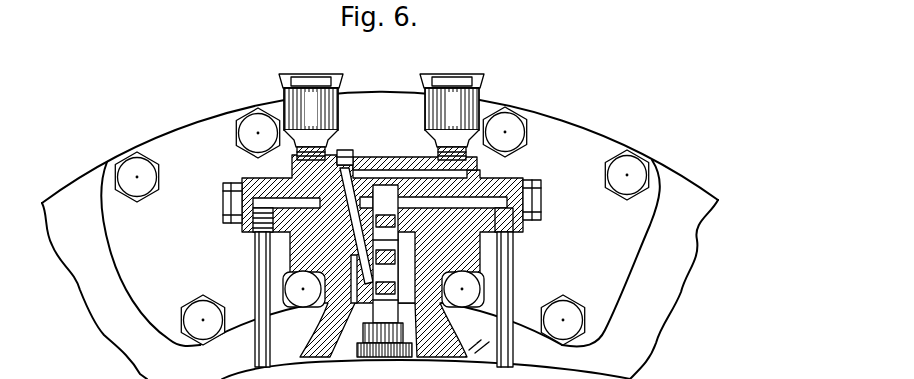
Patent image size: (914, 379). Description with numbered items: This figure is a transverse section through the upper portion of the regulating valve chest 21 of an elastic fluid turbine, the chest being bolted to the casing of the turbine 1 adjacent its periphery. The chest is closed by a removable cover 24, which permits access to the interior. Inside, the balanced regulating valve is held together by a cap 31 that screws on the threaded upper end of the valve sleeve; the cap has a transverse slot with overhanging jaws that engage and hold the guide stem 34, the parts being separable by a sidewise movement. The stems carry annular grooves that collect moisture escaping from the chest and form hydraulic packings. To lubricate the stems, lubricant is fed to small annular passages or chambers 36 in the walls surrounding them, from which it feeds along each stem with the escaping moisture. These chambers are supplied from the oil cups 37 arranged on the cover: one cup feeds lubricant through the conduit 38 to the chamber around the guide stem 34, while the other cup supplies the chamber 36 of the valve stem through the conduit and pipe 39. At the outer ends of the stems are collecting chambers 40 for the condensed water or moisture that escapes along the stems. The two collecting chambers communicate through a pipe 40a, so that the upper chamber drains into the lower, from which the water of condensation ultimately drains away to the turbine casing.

The casing of the turbine 1 is at (380, 235).
The regulating valve chest 21 is at (448, 338).
The removable cover 24 is at (341, 160).
The cap 31 is at (352, 352).
The guide stem 34 is at (374, 308).
The annular passages or chambers 36 is at (398, 303).
The oil cups 37 is at (421, 92).
The conduit 38 is at (399, 174).
The conduit and pipe 39 is at (258, 268).
The collecting chambers 40 is at (433, 200).
The pipe 40a is at (500, 283).